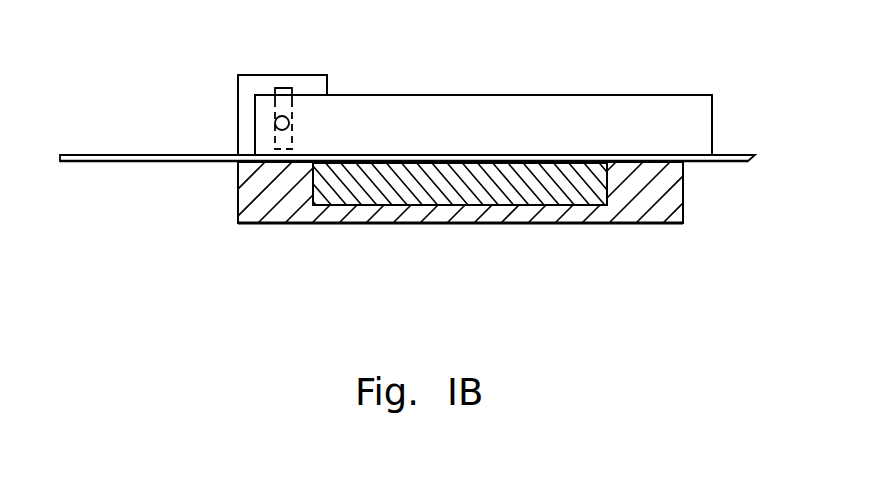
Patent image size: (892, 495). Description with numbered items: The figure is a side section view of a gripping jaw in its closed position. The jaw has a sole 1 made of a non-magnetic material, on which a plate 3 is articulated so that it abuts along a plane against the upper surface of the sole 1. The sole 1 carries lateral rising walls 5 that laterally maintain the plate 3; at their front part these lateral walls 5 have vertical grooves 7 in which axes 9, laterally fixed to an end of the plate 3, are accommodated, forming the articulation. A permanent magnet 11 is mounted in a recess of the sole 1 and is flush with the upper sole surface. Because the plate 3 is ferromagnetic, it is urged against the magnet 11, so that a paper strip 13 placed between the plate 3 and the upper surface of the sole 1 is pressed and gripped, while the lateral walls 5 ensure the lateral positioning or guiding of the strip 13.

The sole 1 is at (683, 195).
The plate 3 is at (652, 141).
The lateral rising walls 5 is at (241, 117).
The vertical grooves 7 is at (275, 88).
The axes 9 is at (289, 124).
The permanent magnet 11 is at (540, 198).
The paper strip 13 is at (140, 160).